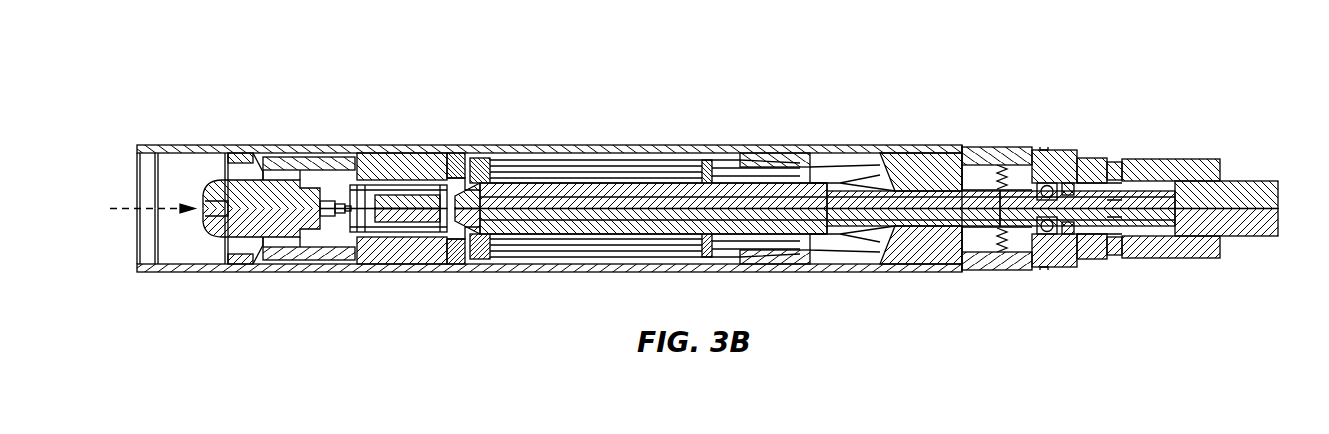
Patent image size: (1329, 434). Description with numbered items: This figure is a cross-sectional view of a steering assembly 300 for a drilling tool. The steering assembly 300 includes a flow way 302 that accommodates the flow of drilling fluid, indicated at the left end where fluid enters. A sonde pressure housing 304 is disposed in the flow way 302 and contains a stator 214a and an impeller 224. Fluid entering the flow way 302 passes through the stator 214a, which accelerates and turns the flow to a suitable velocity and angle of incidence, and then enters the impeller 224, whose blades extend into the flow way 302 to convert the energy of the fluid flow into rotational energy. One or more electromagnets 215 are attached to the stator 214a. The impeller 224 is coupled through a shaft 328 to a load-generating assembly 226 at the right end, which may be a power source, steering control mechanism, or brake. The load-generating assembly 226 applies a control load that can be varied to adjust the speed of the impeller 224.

The steering assembly 300 is at (203, 60).
The flow way 302 is at (122, 206).
The sonde pressure housing 304 is at (252, 149).
The stator 214a is at (393, 153).
The electromagnet 215 is at (398, 236).
The impeller 224 is at (593, 154).
The shaft 328 is at (883, 207).
The load-generating assembly 226 is at (1245, 192).